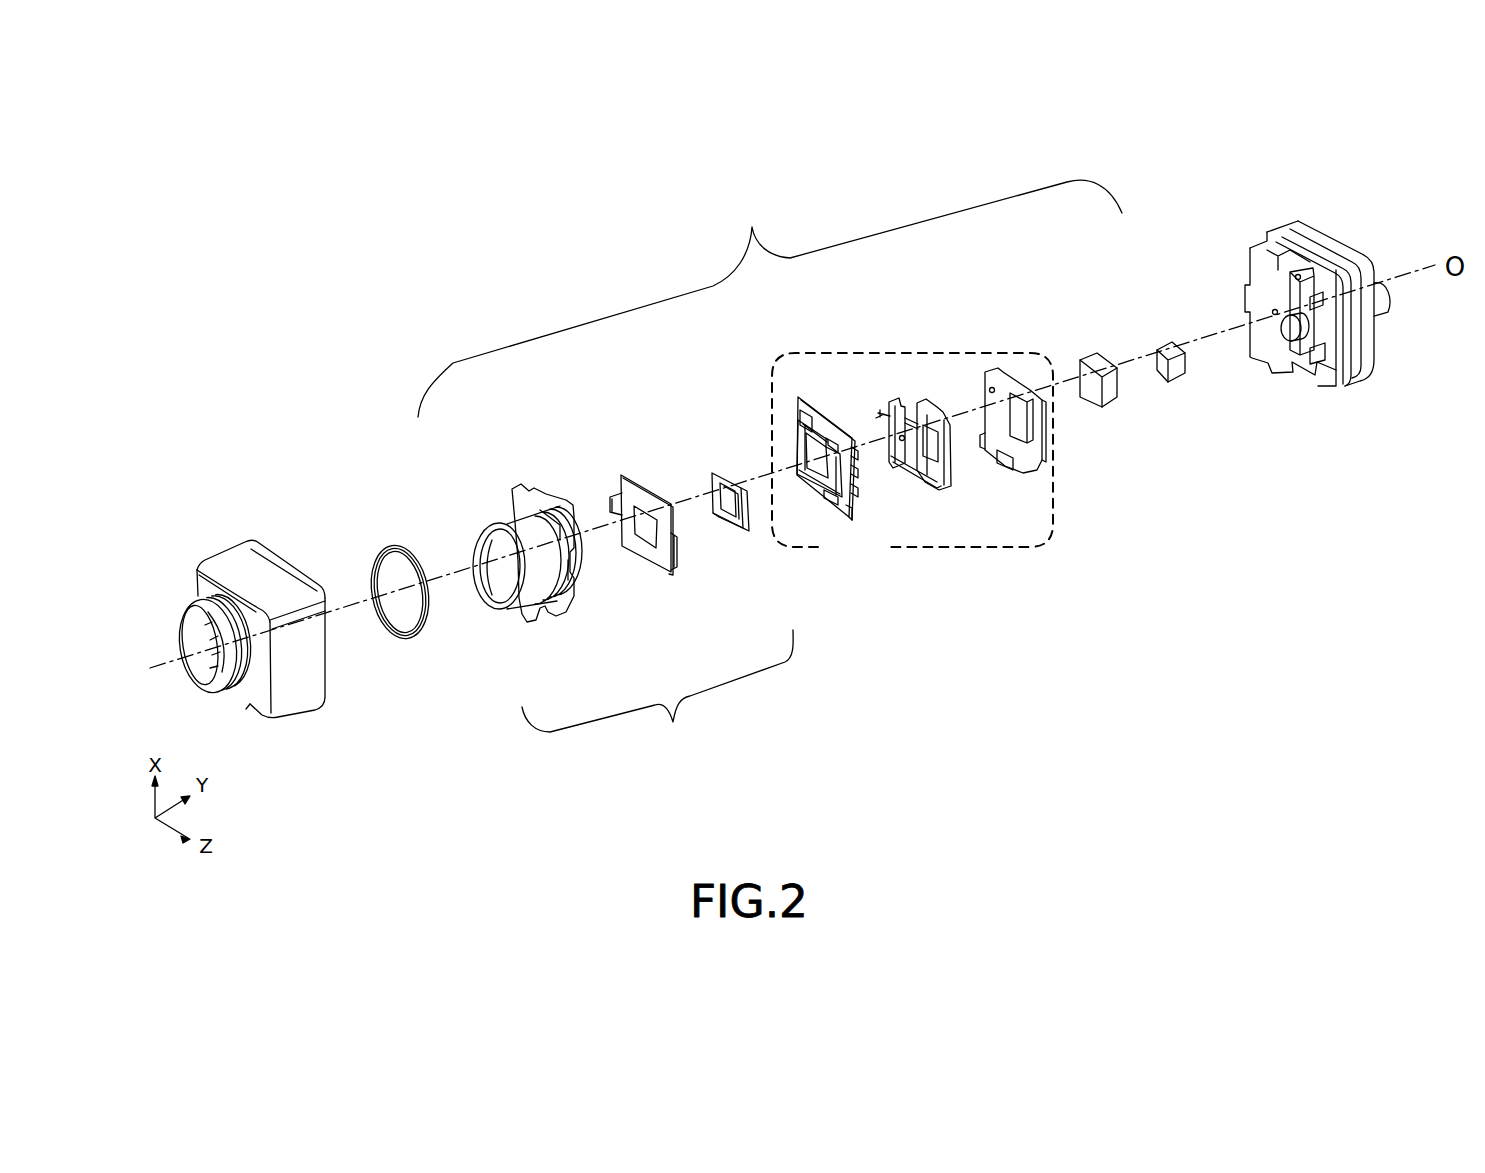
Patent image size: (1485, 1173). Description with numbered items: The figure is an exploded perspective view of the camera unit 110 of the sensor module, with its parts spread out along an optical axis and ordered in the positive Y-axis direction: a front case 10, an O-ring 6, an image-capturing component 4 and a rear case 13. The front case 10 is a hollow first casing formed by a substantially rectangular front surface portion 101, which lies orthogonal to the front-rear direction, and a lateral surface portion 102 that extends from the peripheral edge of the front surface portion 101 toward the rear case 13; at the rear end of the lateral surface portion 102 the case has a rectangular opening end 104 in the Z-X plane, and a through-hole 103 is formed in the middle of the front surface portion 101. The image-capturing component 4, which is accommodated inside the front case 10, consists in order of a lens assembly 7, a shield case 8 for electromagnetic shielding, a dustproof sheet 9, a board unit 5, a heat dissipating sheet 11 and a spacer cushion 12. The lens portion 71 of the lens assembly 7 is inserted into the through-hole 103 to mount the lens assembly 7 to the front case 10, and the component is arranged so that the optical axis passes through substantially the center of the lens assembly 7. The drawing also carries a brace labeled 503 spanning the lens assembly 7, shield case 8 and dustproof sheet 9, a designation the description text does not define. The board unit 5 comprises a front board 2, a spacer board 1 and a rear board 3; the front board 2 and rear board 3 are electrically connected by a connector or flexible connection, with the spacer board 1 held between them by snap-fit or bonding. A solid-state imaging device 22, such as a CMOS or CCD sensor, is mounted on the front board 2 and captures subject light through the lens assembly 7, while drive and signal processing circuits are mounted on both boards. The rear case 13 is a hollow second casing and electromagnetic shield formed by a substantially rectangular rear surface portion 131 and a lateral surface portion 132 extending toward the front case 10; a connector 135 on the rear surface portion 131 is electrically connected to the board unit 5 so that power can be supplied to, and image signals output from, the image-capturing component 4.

The spacer board 1 is at (920, 395).
The front board 2 is at (850, 490).
The rear board 3 is at (1050, 465).
The image-capturing component 4 is at (770, 298).
The board unit 5 is at (957, 450).
The O-ring 6 is at (392, 546).
The lens assembly 7 is at (542, 593).
The lens portion 71 is at (530, 617).
The shield case 8 is at (660, 563).
The dustproof sheet 9 is at (733, 537).
The front case 10 is at (255, 620).
The front surface portion 101 is at (237, 698).
The lateral surface portion 102 is at (303, 658).
The through-hole 103 is at (197, 636).
The opening end 104 is at (282, 558).
The heat dissipating sheet 11 is at (1080, 356).
The spacer cushion 12 is at (1162, 342).
The rear case 13 is at (1351, 295).
The rear surface portion 131 is at (1340, 233).
The lateral surface portion 132 is at (1360, 385).
The connector 135 is at (1390, 300).
The solid-state imaging device 22 is at (806, 397).
The lens group 503 is at (657, 700).
The camera unit 110 is at (1082, 653).